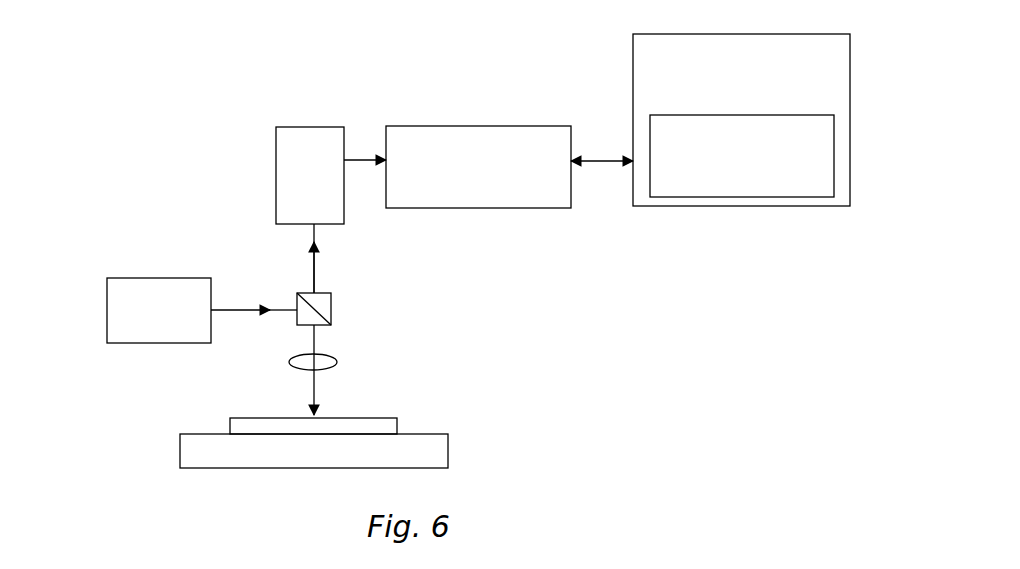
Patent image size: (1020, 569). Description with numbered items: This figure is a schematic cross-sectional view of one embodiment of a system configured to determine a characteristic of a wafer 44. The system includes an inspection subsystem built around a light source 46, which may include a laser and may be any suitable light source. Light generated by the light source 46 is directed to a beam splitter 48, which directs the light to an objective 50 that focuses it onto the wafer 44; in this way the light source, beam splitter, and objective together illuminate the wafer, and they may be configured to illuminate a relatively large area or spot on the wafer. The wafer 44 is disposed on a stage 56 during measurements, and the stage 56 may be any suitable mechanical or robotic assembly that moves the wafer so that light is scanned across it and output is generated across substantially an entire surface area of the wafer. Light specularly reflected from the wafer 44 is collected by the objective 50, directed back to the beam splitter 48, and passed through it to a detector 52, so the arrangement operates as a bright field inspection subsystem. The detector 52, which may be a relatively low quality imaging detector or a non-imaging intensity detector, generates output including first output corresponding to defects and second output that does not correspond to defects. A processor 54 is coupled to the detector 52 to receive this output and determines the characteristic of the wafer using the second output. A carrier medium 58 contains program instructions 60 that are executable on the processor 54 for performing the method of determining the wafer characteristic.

The wafer 44 is at (397, 418).
The light source 46 is at (107, 310).
The beam splitter 48 is at (331, 305).
The objective 50 is at (298, 357).
The detector 52 is at (276, 177).
The processor 54 is at (478, 167).
The stage 56 is at (448, 447).
The carrier medium 58 is at (741, 120).
The program instructions 60 is at (742, 156).